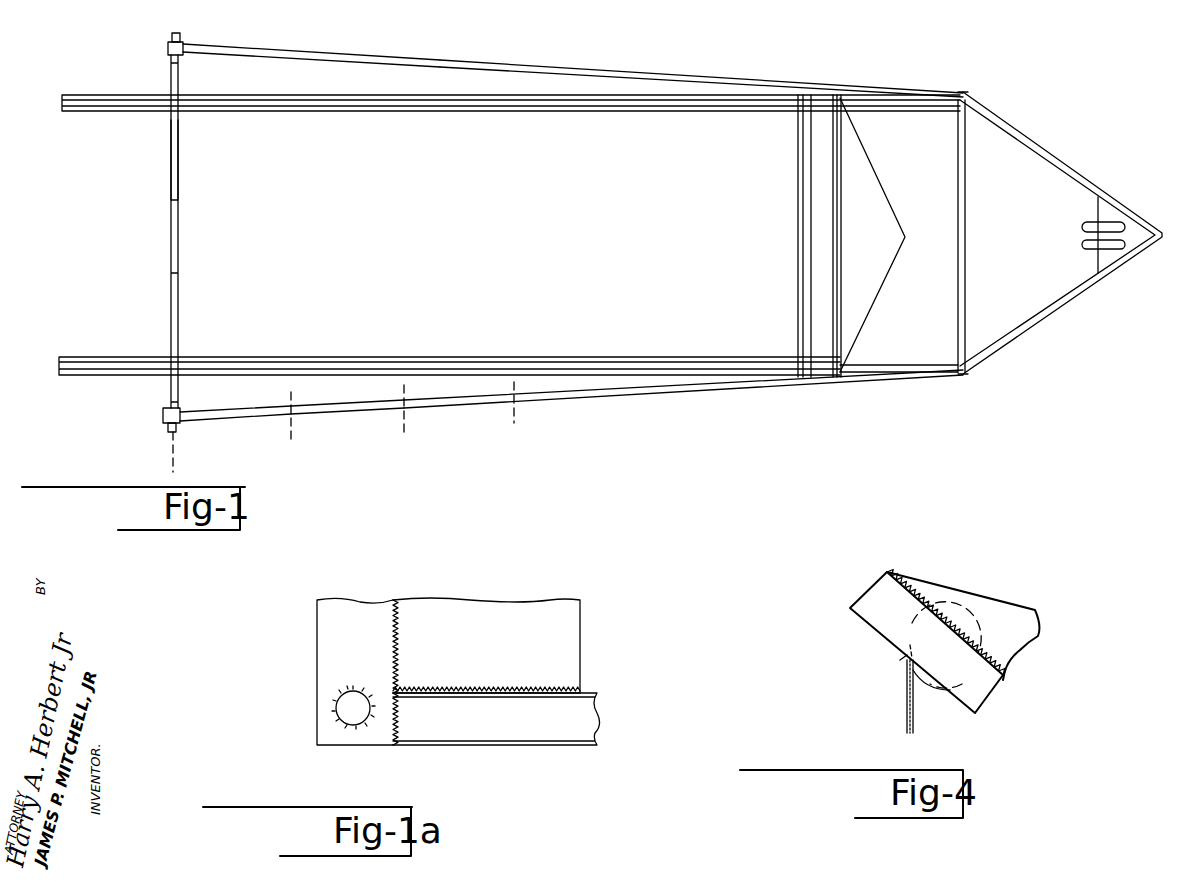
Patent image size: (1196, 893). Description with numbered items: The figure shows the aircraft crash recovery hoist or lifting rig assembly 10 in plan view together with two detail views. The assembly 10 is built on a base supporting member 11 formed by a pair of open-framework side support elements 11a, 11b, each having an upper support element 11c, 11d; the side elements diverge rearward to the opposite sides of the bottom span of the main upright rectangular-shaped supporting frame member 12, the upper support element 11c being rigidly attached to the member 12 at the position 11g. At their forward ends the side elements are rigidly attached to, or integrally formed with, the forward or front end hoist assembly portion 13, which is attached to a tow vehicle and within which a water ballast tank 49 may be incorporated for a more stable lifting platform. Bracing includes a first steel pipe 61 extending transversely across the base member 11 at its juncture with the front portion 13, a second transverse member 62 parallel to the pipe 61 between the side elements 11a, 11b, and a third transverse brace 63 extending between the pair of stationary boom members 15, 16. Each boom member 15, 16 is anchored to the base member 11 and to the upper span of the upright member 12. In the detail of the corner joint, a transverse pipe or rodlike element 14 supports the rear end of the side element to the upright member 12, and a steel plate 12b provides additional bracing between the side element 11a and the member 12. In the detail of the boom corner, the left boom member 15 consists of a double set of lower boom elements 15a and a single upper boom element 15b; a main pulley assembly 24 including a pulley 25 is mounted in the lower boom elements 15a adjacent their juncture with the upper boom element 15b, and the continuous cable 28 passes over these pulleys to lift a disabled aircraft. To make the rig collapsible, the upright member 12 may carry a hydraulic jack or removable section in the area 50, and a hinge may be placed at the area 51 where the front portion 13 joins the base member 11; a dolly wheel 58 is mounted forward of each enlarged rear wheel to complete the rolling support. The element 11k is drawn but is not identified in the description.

In FIG. 1, the aircraft crash recovery hoist or lifting rig assembly 10 is at (509, 198).
In FIG. 1, the base supporting member 11 is at (343, 415).
In FIG. 1, the left-hand side support element 11a is at (462, 410).
In FIG. 1A, the left-hand side support element 11a is at (486, 731).
In FIG. 1, the right-hand side support element 11b is at (493, 62).
In FIG. 1, the upper support element 11c is at (226, 418).
In FIG. 1, the upper support element 11d is at (330, 55).
In FIG. 1, the attachment position 11g is at (162, 420).
In FIG. 1, the upper end connector block 11k is at (188, 44).
In FIG. 1, the main upright rectangular-shaped supporting frame member 12 is at (183, 294).
In FIG. 1A, the main upright rectangular-shaped supporting frame member 12 is at (328, 628).
In FIG. 1A, the steel plate 12b is at (500, 610).
In FIG. 1, the forward or front end hoist assembly portion 13 is at (1028, 243).
In FIG. 1A, the pipe or rodlike elongated transverse element 14 is at (350, 693).
In FIG. 1, the left-hand stationary boom member 15 is at (441, 357).
In FIG. 4, the lower boom elements 15a is at (870, 590).
In FIG. 4, the upper boom element 15b is at (944, 592).
In FIG. 1, the right-hand stationary boom member 16 is at (420, 112).
In FIG. 4, the main pulley assembly 24 is at (902, 657).
In FIG. 4, the pulley 25 is at (930, 692).
In FIG. 4, the cable 28 is at (906, 713).
In FIG. 1, the water ballast tank 49 is at (1007, 150).
In FIG. 1, the removable section area 50 is at (168, 222).
In FIG. 1, the hinge area 51 is at (965, 93).
In FIG. 1, the dolly wheel 58 is at (1110, 220).
In FIG. 1, the first steel pipe 61 is at (966, 205).
In FIG. 1, the second transverse member 62 is at (840, 200).
In FIG. 1, the third transverse brace and supporting member 63 is at (797, 188).